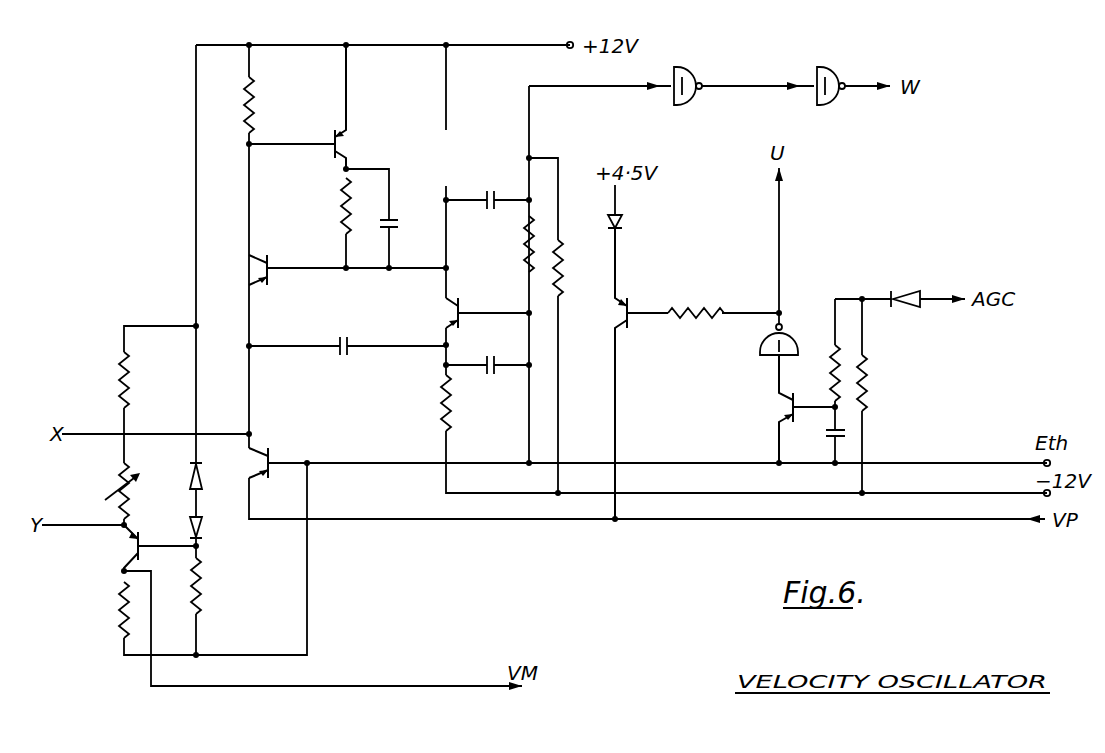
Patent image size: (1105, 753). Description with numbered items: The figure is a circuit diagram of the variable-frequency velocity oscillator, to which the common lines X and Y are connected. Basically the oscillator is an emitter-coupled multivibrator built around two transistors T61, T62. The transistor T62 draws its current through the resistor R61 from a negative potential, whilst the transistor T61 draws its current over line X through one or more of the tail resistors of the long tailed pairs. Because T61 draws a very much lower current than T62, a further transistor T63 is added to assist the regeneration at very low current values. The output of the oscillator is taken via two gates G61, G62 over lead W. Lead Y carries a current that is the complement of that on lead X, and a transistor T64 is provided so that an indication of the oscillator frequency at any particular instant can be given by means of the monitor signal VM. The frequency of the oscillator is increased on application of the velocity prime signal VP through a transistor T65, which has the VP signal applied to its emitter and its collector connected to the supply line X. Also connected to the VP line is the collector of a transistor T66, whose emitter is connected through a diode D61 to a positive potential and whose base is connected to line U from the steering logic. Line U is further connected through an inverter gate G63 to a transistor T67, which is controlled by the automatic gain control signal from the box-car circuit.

The transistor T61 is at (334, 270).
The transistor T62 is at (468, 313).
The transistor T63 is at (323, 156).
The transistor T64 is at (141, 548).
The transistor T65 is at (264, 463).
The transistor T66 is at (678, 373).
The transistor T67 is at (786, 409).
The gate G61 is at (618, 102).
The gate G62 is at (796, 102).
The inverter gate G63 is at (756, 261).
The diode D61 is at (641, 213).
The resistor R61 is at (471, 403).